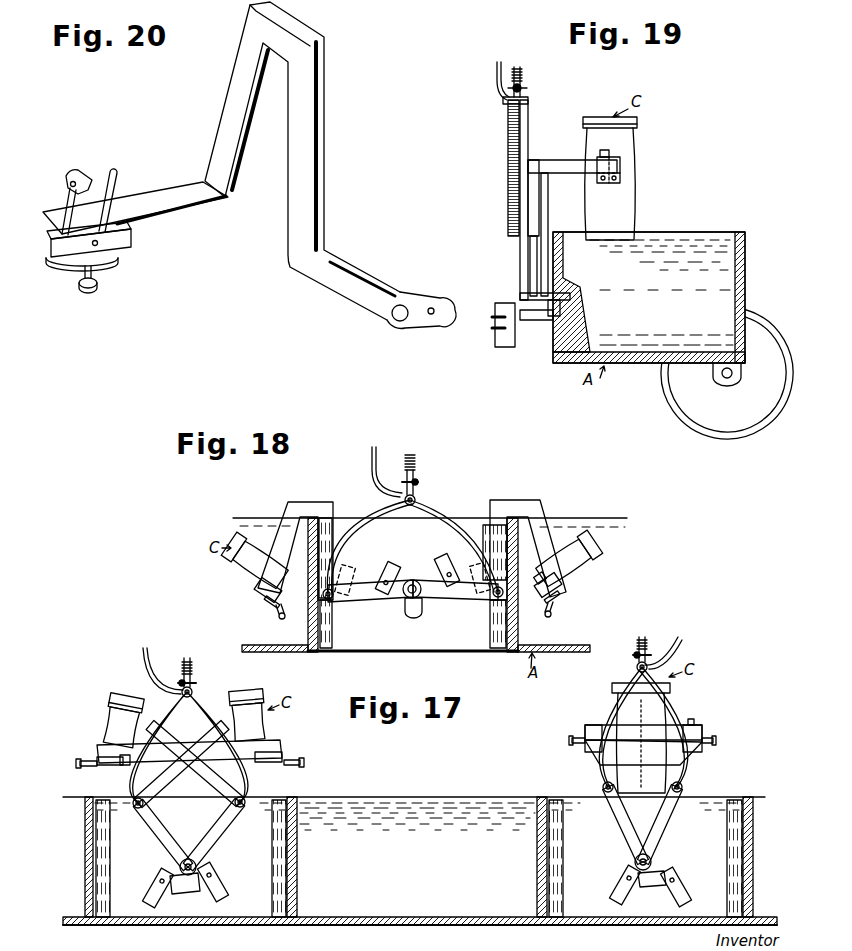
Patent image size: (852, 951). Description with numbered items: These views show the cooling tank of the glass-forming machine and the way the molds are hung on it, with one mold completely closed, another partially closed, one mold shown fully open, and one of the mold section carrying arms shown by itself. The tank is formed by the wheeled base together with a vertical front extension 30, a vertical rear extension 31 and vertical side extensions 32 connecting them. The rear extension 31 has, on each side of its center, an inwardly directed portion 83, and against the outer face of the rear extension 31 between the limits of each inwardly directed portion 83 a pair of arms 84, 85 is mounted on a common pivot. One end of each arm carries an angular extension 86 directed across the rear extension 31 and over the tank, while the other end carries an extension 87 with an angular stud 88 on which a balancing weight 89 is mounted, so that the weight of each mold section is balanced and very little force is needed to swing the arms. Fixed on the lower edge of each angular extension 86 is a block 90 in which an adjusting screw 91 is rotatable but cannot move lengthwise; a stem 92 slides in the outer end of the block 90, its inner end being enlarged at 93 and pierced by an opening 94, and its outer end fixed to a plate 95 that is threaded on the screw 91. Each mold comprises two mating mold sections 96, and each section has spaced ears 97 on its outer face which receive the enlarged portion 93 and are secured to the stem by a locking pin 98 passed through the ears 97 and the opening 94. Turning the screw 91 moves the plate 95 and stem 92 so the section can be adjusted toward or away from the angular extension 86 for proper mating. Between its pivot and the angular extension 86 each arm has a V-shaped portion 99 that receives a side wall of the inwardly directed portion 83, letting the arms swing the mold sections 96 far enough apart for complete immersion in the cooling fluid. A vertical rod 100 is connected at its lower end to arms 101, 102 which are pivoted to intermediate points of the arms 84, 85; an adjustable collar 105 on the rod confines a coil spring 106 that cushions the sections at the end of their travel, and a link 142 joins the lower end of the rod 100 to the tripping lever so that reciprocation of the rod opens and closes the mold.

In FIG. 19, the front extension 30 is at (747, 273).
In FIG. 18, the front extension 30 is at (477, 517).
In FIG. 17, the front extension 30 is at (466, 797).
In FIG. 19, the rear extension 31 is at (553, 345).
In FIG. 18, the rear extension 31 is at (308, 632).
In FIG. 17, the rear extension 31 is at (298, 897).
In FIG. 19, the side extension 32 is at (698, 232).
In FIG. 19, the inwardly directed portion 83 is at (566, 346).
In FIG. 18, the inwardly directed portion 83 is at (440, 645).
In FIG. 17, the inwardly directed portion 83 is at (260, 918).
In FIG. 19, the arm 84 is at (531, 249).
In FIG. 18, the arm 84 is at (360, 597).
In FIG. 17, the arm 84 is at (228, 836).
In FIG. 19, the arm 85 is at (542, 264).
In FIG. 18, the arm 85 is at (453, 598).
In FIG. 17, the arm 85 is at (152, 830).
In FIG. 20, the angular extension 86 is at (170, 203).
In FIG. 19, the angular extension 86 is at (565, 161).
In FIG. 20, the extension 87 is at (436, 326).
In FIG. 19, the extension 87 is at (553, 317).
In FIG. 17, the extension 87 is at (178, 869).
In FIG. 19, the angular stud 88 is at (537, 321).
In FIG. 17, the angular stud 88 is at (150, 893).
In FIG. 19, the balancing weight 89 is at (505, 303).
In FIG. 18, the balancing weight 89 is at (433, 561).
In FIG. 17, the balancing weight 89 is at (170, 896).
In FIG. 20, the block 90 is at (119, 241).
In FIG. 18, the block 90 is at (281, 600).
In FIG. 17, the block 90 is at (268, 763).
In FIG. 20, the adjusting screw 91 is at (94, 289).
In FIG. 19, the adjusting screw 91 is at (600, 178).
In FIG. 18, the adjusting screw 91 is at (275, 612).
In FIG. 17, the adjusting screw 91 is at (84, 767).
In FIG. 20, the stem 92 is at (67, 196).
In FIG. 20, the enlarged portion 93 is at (72, 172).
In FIG. 20, the opening 94 is at (89, 181).
In FIG. 20, the plate 95 is at (63, 273).
In FIG. 19, the plate 95 is at (622, 182).
In FIG. 18, the plate 95 is at (267, 603).
In FIG. 17, the plate 95 is at (108, 766).
In FIG. 19, the mold section 96 is at (637, 152).
In FIG. 18, the mold section 96 is at (226, 568).
In FIG. 17, the mold section 96 is at (107, 722).
In FIG. 18, the ear 97 is at (539, 583).
In FIG. 17, the ear 97 is at (127, 765).
In FIG. 17, the locking pin 98 is at (96, 750).
In FIG. 20, the V-shaped portion 99 is at (311, 128).
In FIG. 19, the V-shaped portion 99 is at (528, 174).
In FIG. 18, the V-shaped portion 99 is at (318, 498).
In FIG. 17, the V-shaped portion 99 is at (173, 722).
In FIG. 19, the vertical rod 100 is at (524, 101).
In FIG. 18, the vertical rod 100 is at (407, 459).
In FIG. 17, the vertical rod 100 is at (187, 658).
In FIG. 19, the arm 101 is at (507, 135).
In FIG. 18, the arm 101 is at (374, 516).
In FIG. 17, the arm 101 is at (215, 718).
In FIG. 19, the arm 102 is at (528, 133).
In FIG. 18, the arm 102 is at (452, 511).
In FIG. 17, the arm 102 is at (167, 712).
In FIG. 19, the adjustable collar 105 is at (526, 88).
In FIG. 18, the adjustable collar 105 is at (409, 482).
In FIG. 17, the adjustable collar 105 is at (196, 683).
In FIG. 19, the coil spring 106 is at (522, 70).
In FIG. 18, the coil spring 106 is at (418, 464).
In FIG. 17, the coil spring 106 is at (193, 664).
In FIG. 19, the link 142 is at (497, 76).
In FIG. 18, the link 142 is at (371, 460).
In FIG. 17, the link 142 is at (146, 662).